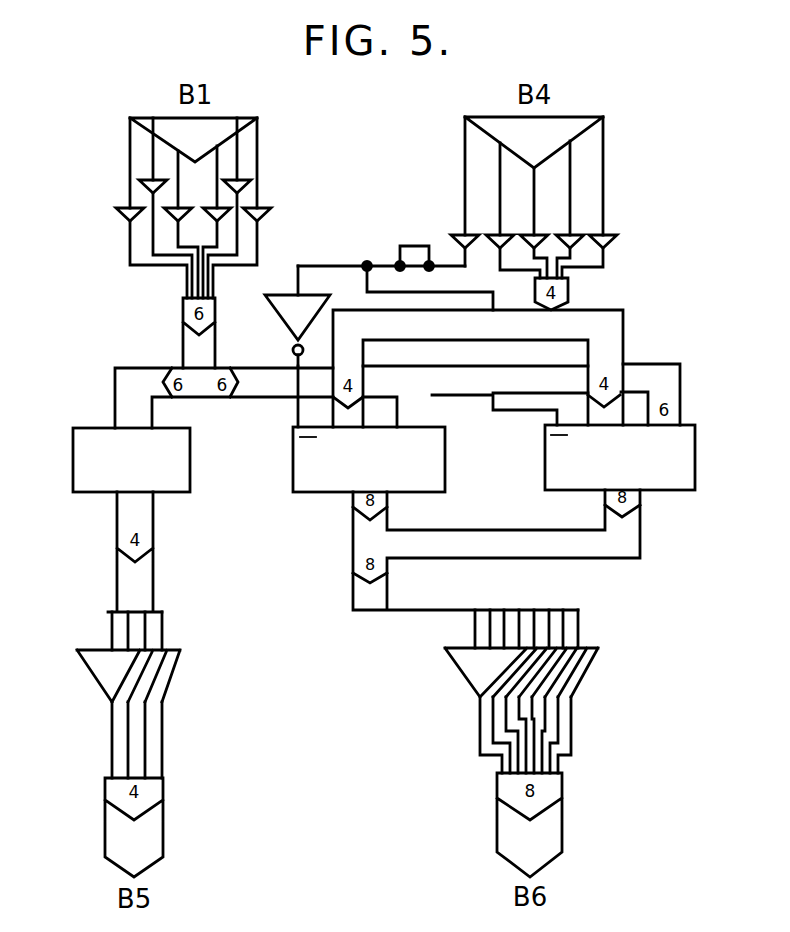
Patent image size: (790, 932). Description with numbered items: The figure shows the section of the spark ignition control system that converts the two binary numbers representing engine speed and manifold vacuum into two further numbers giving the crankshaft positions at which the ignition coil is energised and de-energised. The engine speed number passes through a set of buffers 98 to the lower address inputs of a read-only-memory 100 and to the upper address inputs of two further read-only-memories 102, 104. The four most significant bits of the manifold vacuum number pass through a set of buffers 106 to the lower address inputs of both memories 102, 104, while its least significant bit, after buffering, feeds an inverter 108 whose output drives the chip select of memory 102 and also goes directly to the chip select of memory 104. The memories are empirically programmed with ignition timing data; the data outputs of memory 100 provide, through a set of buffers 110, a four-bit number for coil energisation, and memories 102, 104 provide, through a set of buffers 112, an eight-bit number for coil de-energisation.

The set of buffers 98 is at (124, 214).
The read-only-memory 100 is at (190, 452).
The read-only-memory 102 is at (294, 460).
The read-only-memory 104 is at (546, 460).
The set of buffers 106 is at (612, 246).
The inverter 108 is at (296, 315).
The set of buffers 110 is at (90, 668).
The set of buffers 112 is at (462, 670).